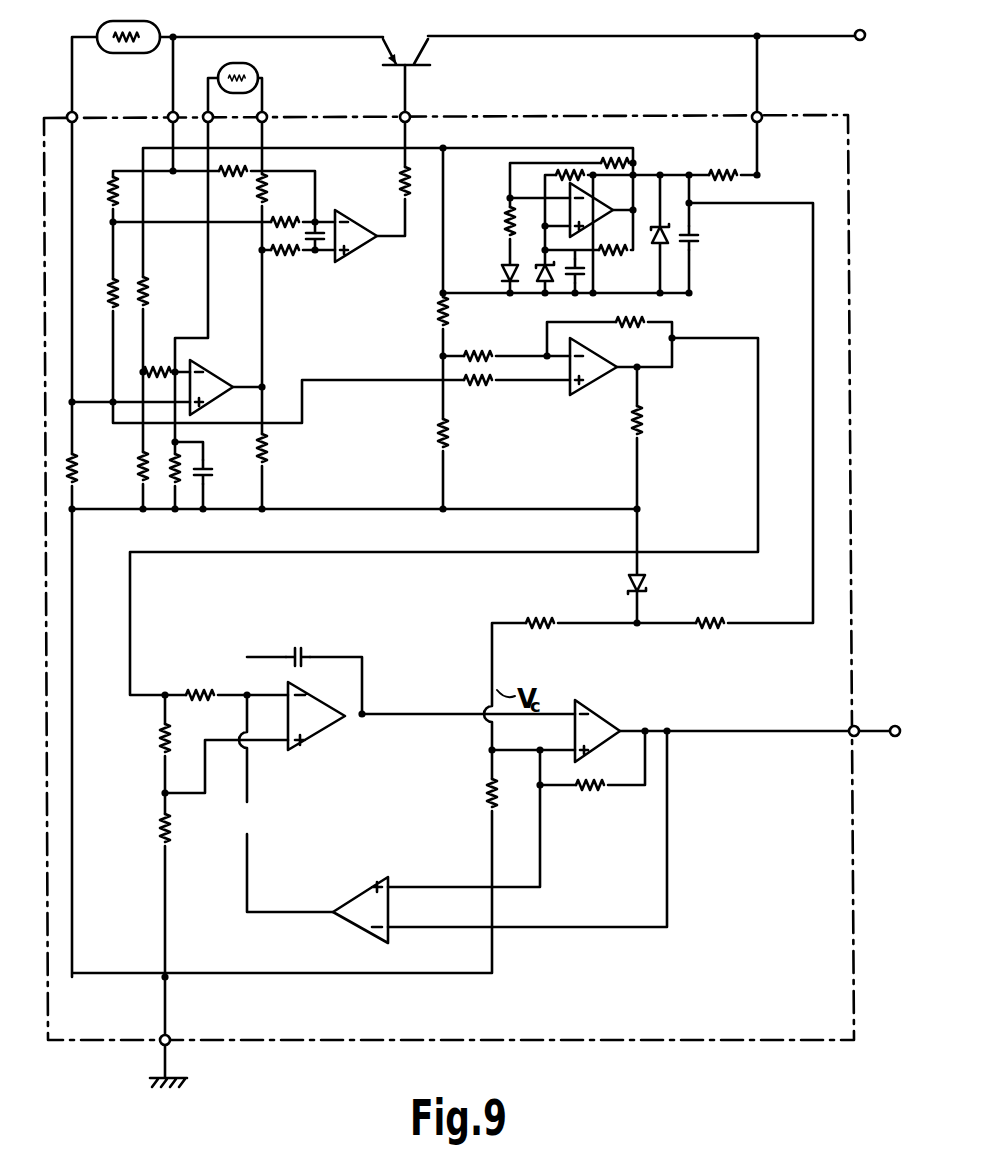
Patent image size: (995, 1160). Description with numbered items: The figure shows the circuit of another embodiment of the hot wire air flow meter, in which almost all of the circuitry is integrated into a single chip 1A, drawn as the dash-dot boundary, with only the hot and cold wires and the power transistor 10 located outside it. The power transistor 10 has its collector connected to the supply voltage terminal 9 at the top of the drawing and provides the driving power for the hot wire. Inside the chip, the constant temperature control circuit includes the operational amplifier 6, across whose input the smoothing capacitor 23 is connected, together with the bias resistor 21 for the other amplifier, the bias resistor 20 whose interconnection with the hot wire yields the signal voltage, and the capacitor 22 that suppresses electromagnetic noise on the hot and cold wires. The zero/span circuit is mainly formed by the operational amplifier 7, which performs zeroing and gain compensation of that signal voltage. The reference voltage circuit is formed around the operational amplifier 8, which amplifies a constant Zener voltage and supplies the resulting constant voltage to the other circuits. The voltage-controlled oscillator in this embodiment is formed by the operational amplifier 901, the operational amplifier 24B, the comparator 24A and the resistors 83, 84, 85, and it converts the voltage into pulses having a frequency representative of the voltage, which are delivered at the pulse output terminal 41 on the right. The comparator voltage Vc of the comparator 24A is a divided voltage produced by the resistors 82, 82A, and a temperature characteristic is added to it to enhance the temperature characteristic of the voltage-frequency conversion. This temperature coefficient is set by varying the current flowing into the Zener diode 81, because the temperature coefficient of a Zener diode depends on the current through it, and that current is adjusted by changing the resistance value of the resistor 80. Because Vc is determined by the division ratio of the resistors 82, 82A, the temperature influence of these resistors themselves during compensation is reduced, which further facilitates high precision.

The power transistor 10 is at (430, 65).
The supply voltage terminal 9 is at (852, 40).
The operational amplifier 8 is at (572, 218).
The operational amplifier 6 is at (370, 250).
The smoothing capacitor 23 is at (320, 252).
The bias resistor 21 is at (113, 308).
The bias resistor 20 is at (76, 478).
The capacitor 22 is at (210, 480).
The operational amplifier 7 is at (605, 382).
The resistor 82 is at (545, 620).
The Zener diode 81 is at (625, 583).
The resistor 80 is at (727, 620).
The resistor 83 is at (160, 741).
The resistor 84 is at (160, 829).
The operational amplifier 901 is at (322, 722).
The operational amplifier 24B is at (340, 908).
The resistor 82A is at (485, 793).
The resistor 85 is at (600, 790).
The comparator 24A is at (605, 716).
The pulse output terminal 41 is at (893, 740).
The single chip 1A is at (512, 1041).